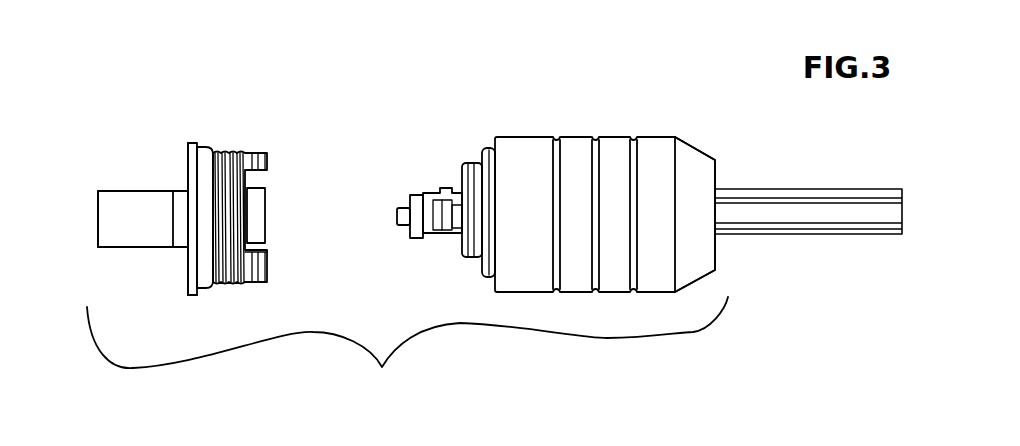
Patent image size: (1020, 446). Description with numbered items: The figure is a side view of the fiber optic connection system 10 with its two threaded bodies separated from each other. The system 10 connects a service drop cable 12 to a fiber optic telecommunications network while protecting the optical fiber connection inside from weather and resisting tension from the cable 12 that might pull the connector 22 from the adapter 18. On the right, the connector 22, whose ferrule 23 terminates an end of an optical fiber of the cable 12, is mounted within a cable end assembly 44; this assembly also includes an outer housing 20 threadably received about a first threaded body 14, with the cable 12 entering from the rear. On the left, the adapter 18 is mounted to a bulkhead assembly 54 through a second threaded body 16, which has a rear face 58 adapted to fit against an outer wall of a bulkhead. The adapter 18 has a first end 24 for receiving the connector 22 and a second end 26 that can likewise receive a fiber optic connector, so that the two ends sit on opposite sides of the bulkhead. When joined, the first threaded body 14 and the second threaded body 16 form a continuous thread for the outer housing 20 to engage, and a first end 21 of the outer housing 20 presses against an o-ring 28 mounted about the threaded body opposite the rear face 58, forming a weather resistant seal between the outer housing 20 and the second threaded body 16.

The fiber optic connection system 10 is at (407, 349).
The service drop cable 12 is at (821, 213).
The first threaded body 14 is at (463, 168).
The second threaded body 16 is at (195, 154).
The adapter 18 is at (112, 208).
The outer housing 20 is at (700, 264).
The first end of outer housing 21 is at (492, 150).
The connector 22 is at (413, 196).
The ferrule 23 is at (400, 224).
The first end of adapter 24 is at (267, 230).
The second end of adapter 26 is at (98, 193).
The o-ring 28 is at (207, 152).
The cable end assembly 44 is at (583, 117).
The bulkhead assembly 54 is at (190, 127).
The rear face 58 is at (188, 265).